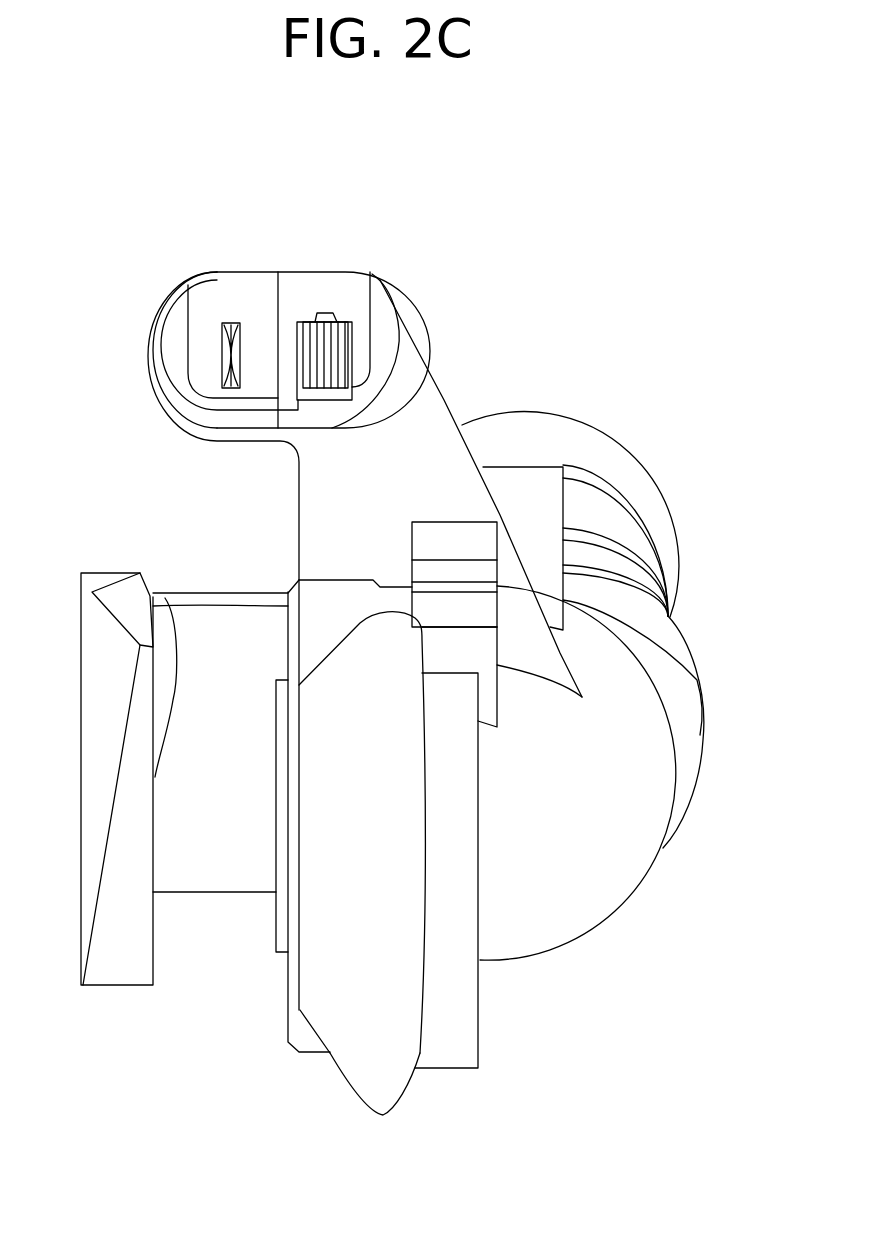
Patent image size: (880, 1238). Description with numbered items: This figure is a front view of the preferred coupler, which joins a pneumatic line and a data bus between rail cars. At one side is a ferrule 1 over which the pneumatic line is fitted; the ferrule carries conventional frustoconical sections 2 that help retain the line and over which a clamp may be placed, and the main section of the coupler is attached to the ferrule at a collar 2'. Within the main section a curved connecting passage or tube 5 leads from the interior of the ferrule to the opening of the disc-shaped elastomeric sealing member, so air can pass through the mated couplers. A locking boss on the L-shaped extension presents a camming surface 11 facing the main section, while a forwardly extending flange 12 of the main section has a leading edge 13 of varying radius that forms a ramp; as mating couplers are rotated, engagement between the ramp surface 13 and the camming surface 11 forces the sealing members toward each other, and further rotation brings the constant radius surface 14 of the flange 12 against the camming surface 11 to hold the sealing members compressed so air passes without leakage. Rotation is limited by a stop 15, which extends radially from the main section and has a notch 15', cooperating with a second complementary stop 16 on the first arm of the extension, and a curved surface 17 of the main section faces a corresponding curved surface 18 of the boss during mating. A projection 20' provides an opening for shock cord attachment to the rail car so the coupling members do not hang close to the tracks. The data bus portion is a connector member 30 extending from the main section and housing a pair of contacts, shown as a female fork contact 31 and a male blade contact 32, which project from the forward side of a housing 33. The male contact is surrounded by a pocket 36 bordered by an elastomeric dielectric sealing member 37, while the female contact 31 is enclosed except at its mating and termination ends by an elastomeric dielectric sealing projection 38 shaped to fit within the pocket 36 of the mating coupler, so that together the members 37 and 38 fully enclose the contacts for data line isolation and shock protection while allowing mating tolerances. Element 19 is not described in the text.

The ferrule 1 is at (633, 447).
The frustoconical sections 2 is at (660, 600).
The collar 2' is at (719, 732).
The curved connecting passage or tube 5 is at (645, 790).
The camming surface 11 is at (153, 808).
The forwardly extending flange 12 is at (408, 922).
The leading edge 13 is at (403, 1090).
The constant radius surface 14 is at (422, 785).
The stop 15 is at (445, 545).
The notch 15' is at (552, 652).
The second complementary stop 16 is at (132, 603).
The curved surface 17 is at (460, 855).
The curved surface 18 is at (130, 770).
The cover plate 19 is at (230, 648).
The projection 20' is at (570, 489).
The connector member 30 is at (437, 426).
The female fork contact 31 is at (330, 348).
The male blade contact 32 is at (232, 355).
The housing 33 is at (383, 373).
The pocket 36 is at (207, 302).
The elastomeric dielectric sealing member 37 is at (240, 355).
The elastomeric dielectric sealing projection 38 is at (320, 297).